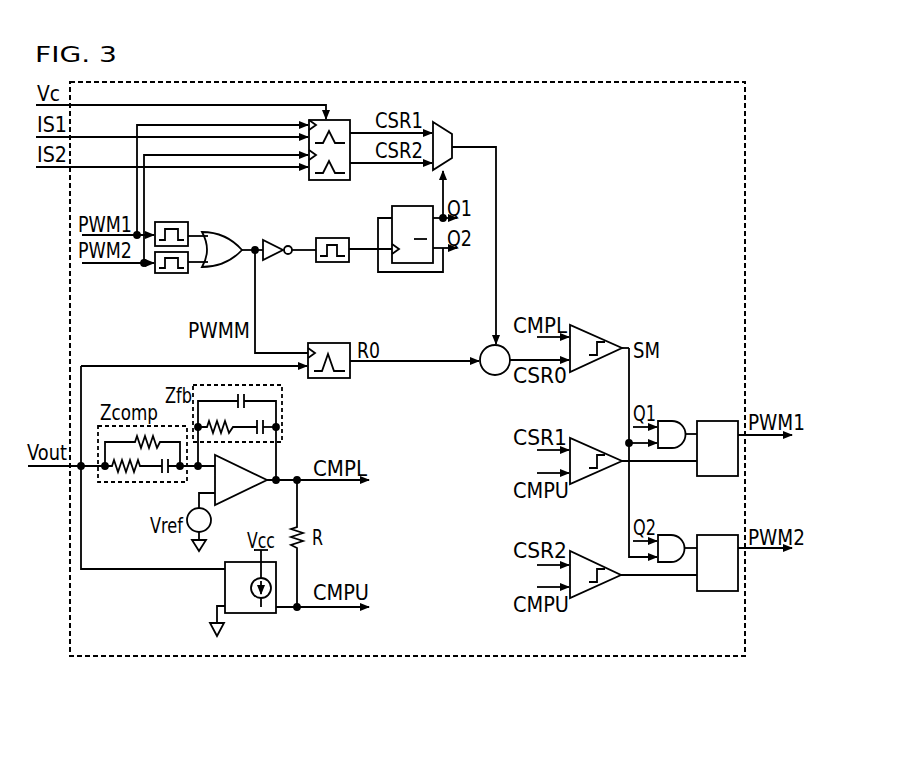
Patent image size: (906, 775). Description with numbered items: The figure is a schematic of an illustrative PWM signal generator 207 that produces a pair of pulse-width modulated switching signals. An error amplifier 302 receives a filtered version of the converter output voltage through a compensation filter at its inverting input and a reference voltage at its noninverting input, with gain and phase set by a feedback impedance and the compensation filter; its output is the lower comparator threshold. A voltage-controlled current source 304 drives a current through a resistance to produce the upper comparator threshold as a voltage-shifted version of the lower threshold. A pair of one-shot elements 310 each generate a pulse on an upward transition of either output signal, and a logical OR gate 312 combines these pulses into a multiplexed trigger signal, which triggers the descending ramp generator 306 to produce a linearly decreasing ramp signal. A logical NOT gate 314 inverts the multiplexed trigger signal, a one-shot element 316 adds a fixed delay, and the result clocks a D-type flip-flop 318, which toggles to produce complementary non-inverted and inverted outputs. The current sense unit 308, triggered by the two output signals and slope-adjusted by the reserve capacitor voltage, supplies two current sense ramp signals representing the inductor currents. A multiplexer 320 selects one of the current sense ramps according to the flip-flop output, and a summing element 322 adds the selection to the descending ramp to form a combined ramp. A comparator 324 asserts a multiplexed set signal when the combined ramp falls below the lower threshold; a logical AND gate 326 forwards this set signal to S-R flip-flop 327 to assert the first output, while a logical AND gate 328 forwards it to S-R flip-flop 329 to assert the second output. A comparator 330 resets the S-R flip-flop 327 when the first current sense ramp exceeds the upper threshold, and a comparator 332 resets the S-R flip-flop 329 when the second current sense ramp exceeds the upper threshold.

The PWM signal generator 207 is at (702, 655).
The error amplifier 302 is at (238, 491).
The voltage-controlled current source 304 is at (250, 615).
The descending ramp generator 306 is at (326, 343).
The current sense unit 308 is at (328, 181).
The one-shot elements 310 is at (188, 250).
The logical OR gate 312 is at (231, 241).
The logical NOT gate 314 is at (272, 259).
The one-shot element 316 is at (345, 264).
The D-type flip-flop 318 is at (409, 206).
The multiplexer 320 is at (438, 121).
The summing element 322 is at (484, 373).
The comparator 324 is at (578, 371).
The logical AND gate 326 is at (678, 419).
The S-R flip-flop 327 is at (728, 478).
The logical AND gate 328 is at (676, 533).
The S-R flip-flop 329 is at (728, 592).
The comparator 330 is at (578, 484).
The comparator 332 is at (578, 598).